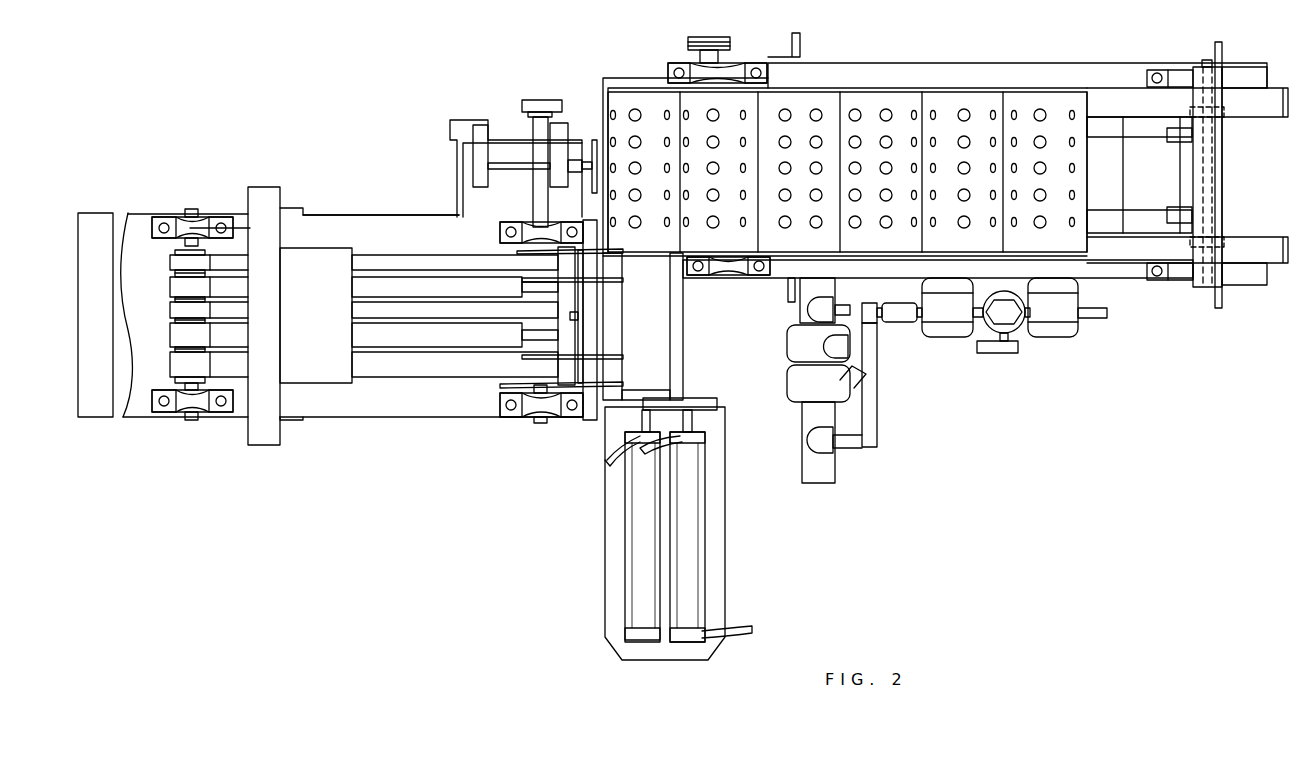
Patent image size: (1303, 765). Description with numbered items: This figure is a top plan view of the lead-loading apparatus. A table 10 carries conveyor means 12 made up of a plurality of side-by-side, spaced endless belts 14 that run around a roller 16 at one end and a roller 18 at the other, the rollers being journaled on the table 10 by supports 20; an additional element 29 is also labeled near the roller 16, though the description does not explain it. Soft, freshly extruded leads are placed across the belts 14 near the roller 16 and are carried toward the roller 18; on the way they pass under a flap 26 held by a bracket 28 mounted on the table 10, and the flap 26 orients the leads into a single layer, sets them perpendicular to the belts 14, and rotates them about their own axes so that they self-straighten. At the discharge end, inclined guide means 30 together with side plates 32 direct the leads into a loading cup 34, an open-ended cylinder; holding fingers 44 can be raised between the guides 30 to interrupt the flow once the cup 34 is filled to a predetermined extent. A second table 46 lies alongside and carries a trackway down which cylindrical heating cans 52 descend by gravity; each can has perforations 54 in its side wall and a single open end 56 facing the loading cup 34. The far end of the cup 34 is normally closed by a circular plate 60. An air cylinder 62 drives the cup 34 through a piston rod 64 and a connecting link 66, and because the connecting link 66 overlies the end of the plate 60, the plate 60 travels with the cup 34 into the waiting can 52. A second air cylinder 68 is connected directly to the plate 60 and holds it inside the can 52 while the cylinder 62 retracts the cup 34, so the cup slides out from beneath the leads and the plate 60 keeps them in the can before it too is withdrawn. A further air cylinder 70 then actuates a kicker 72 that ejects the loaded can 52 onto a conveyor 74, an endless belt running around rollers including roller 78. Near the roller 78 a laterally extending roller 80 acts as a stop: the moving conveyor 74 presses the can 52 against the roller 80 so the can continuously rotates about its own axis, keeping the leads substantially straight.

The table 10 is at (360, 230).
The conveyor means 12 is at (407, 400).
The endless belts 14 is at (418, 395).
The roller 16 is at (175, 381).
The roller 18 is at (515, 250).
The supports 20 is at (211, 412).
The flap 26 is at (330, 258).
The bracket 28 is at (260, 190).
The shaft 29 is at (205, 222).
The inclined guide means 30 is at (604, 282).
The side plates 32 is at (580, 240).
The loading cup 34 is at (677, 355).
The holding fingers 44 is at (582, 292).
The second table 46 is at (928, 68).
The heating cans 52 is at (832, 92).
The perforations 54 is at (1052, 105).
The open end 56 is at (1068, 252).
The circular plate 60 is at (660, 393).
The air cylinder 62 is at (688, 523).
The piston rod 64 is at (692, 420).
The connecting link 66 is at (700, 400).
The air cylinder 68 is at (640, 545).
The air cylinder 70 is at (498, 152).
The kicker 72 is at (592, 145).
The conveyor 74 is at (1138, 210).
The roller 78 is at (1170, 205).
The roller 80 is at (1205, 196).